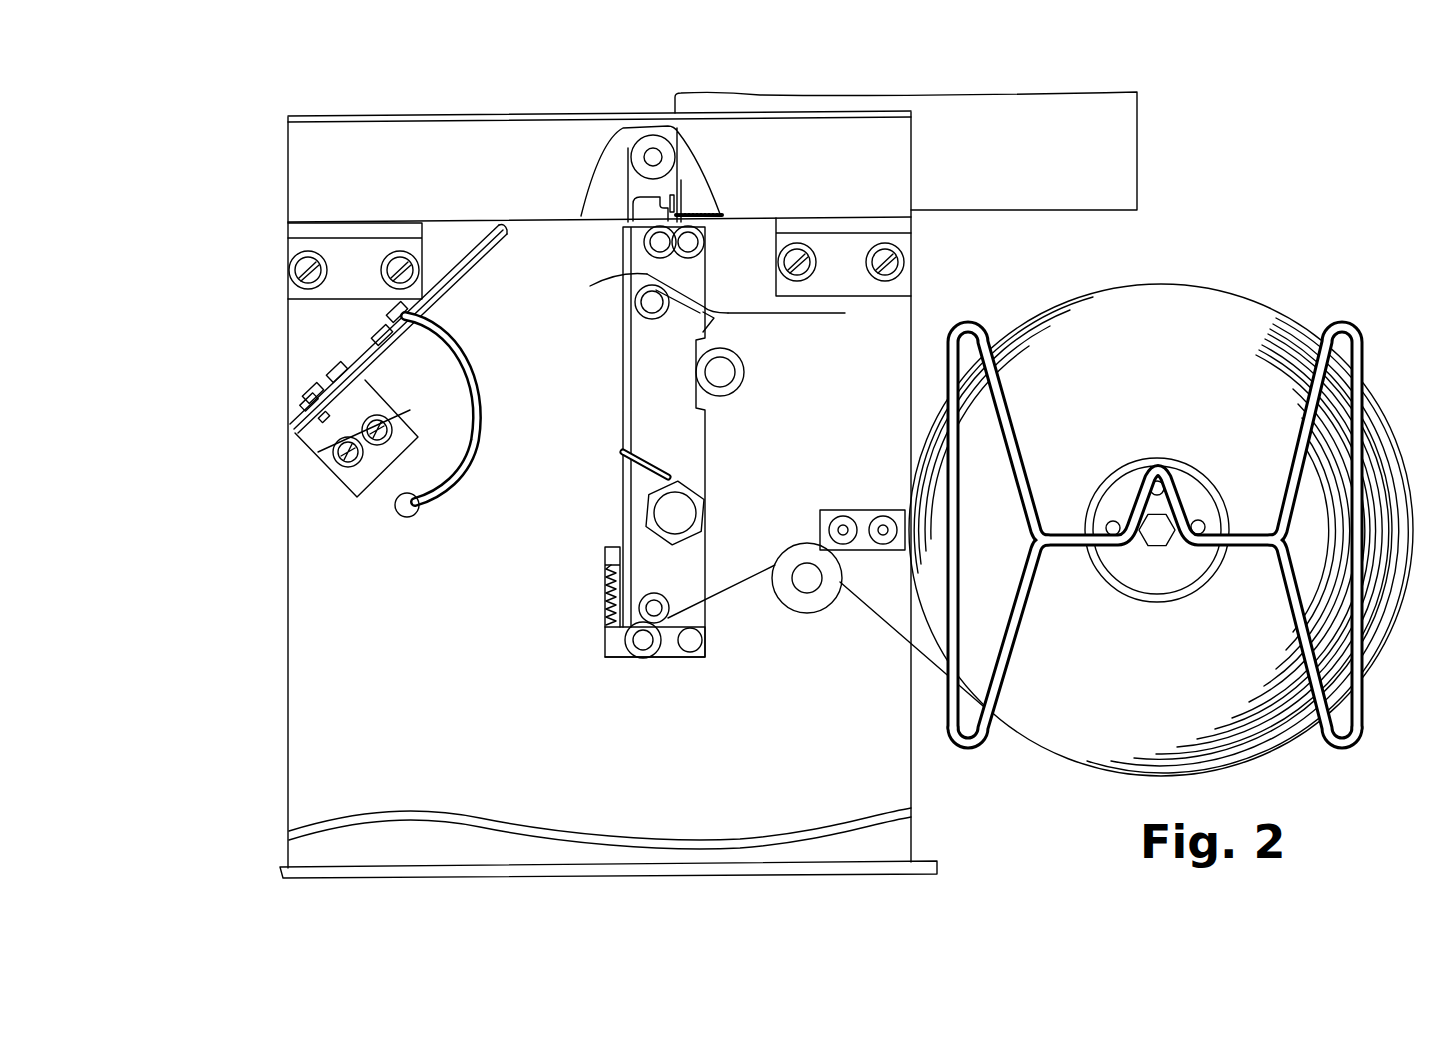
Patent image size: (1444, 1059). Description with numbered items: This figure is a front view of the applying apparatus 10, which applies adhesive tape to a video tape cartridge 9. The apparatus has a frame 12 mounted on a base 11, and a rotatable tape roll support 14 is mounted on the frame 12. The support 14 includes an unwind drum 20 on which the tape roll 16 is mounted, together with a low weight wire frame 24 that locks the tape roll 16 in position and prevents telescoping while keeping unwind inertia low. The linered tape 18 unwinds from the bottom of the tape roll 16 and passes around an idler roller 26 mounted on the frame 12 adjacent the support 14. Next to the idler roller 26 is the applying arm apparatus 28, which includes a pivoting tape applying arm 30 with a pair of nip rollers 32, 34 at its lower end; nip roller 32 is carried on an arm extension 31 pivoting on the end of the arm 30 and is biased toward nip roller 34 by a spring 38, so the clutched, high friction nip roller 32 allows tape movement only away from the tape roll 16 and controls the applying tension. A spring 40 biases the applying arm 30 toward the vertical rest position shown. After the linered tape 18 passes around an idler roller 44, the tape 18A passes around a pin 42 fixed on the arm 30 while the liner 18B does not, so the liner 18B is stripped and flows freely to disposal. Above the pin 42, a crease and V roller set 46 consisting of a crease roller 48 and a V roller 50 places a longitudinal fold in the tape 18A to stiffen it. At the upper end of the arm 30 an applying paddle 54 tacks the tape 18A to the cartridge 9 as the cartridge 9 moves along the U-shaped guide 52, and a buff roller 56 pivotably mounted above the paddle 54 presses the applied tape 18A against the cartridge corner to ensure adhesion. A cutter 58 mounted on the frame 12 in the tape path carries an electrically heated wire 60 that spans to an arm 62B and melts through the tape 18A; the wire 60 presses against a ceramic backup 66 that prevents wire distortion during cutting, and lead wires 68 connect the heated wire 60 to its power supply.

The cartridge 9 is at (1118, 188).
The applying apparatus 10 is at (1298, 152).
The base 11 is at (283, 869).
The frame 12 is at (300, 577).
The rotatable tape roll support 14 is at (1186, 565).
The tape roll 16 is at (1268, 285).
The linered tape 18 is at (900, 632).
The tape 18A is at (703, 283).
The liner 18B is at (770, 314).
The unwind drum 20 is at (1143, 578).
The wire frame 24 is at (1345, 748).
The idler roller 26 is at (806, 613).
The applying arm apparatus 28 is at (586, 396).
The tape applying arm 30 is at (690, 428).
The arm extension 31 is at (607, 658).
The nip roller 32 is at (642, 660).
The nip roller 34 is at (664, 602).
The spring 38 is at (604, 592).
The spring 40 is at (652, 472).
The pin 42 is at (633, 276).
The idler roller 44 is at (634, 305).
The crease and V roller set 46 is at (703, 212).
The crease roller 48 is at (644, 242).
The V roller 50 is at (704, 243).
The guide 52 is at (416, 128).
The applying paddle 54 is at (633, 206).
The buff roller 56 is at (652, 136).
The cutter 58 is at (482, 266).
The electrically heated wire 60 is at (510, 241).
The arm 62B is at (363, 366).
The ceramic backup 66 is at (462, 280).
The lead wires 68 is at (470, 392).